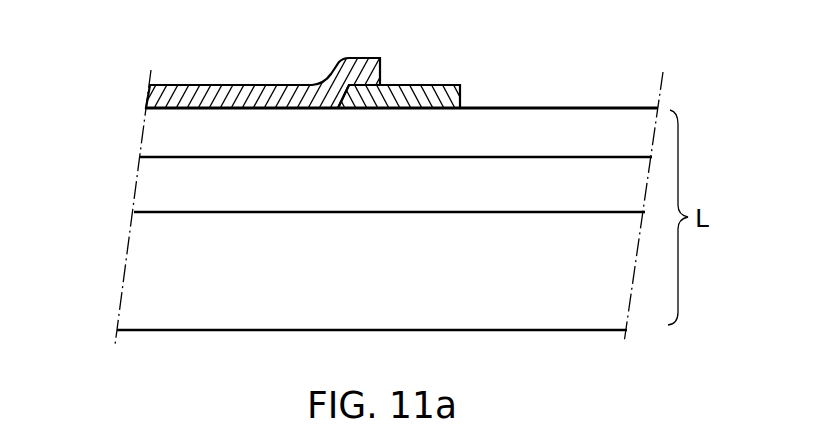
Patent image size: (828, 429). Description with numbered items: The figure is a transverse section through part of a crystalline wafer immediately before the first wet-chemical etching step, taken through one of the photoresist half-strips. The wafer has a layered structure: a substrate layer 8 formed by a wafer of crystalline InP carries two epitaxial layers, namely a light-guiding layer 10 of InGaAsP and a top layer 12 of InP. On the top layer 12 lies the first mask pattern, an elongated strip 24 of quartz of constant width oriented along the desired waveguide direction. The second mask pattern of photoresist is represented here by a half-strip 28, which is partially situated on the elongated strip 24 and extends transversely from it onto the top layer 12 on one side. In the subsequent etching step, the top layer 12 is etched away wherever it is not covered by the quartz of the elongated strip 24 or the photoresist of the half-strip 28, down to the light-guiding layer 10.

The substrate layer 8 is at (172, 242).
The light-guiding layer 10 is at (178, 188).
The top layer 12 is at (175, 138).
The elongated strip 24 is at (440, 84).
The half-strip 28 is at (293, 85).